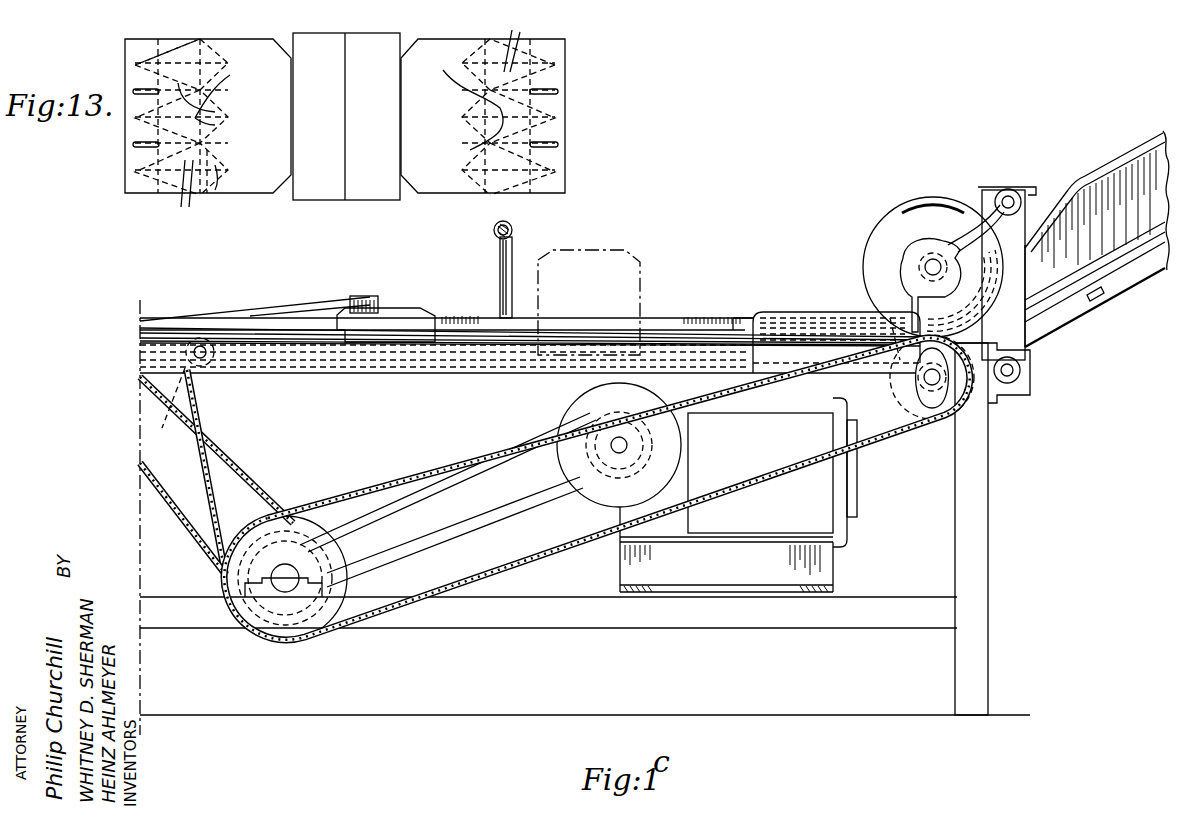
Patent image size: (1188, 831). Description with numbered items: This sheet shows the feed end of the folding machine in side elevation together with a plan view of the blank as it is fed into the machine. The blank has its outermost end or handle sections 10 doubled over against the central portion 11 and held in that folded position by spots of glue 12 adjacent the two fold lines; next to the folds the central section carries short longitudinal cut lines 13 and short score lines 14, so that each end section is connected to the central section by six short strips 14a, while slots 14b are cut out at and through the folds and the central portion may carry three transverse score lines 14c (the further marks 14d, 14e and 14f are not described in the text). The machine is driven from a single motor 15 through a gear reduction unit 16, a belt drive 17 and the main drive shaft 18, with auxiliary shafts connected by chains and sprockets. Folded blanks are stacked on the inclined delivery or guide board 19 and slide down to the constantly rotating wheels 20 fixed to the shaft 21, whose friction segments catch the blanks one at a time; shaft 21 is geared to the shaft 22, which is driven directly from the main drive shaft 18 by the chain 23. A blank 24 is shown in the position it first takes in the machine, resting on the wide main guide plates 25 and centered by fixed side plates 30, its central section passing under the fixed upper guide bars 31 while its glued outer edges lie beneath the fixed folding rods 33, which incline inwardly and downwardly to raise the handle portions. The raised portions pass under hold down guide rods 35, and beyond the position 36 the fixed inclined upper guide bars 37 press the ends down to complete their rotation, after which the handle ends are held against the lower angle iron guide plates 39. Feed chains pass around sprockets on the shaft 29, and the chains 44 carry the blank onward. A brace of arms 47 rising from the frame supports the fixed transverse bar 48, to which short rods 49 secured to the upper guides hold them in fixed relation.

In FIG. 13, the end or handle section 10 is at (345, 117).
In FIG. 13, the central portion 11 is at (369, 190).
In FIG. 13, the spot of glue 12 is at (125, 173).
In FIG. 13, the short longitudinal cut line 13 is at (215, 70).
In FIG. 13, the short score line 14 is at (540, 158).
In FIG. 13, the short strip 14a is at (368, 117).
In FIG. 13, the slot 14b is at (140, 93).
In FIG. 13, the transverse score line 14c is at (345, 96).
In FIG. 13, the flap 14d is at (220, 152).
In FIG. 13, the flap 14e is at (210, 128).
In FIG. 13, the flap 14f is at (215, 190).
In FIG. 1C, the motor 15 is at (792, 426).
In FIG. 1C, the gear reduction unit 16 is at (580, 412).
In FIG. 1C, the belt drive 17 is at (528, 510).
In FIG. 1C, the main drive shaft 18 is at (292, 578).
In FIG. 1C, the inclined delivery or guide board 19 is at (1112, 260).
In FIG. 1C, the constantly rotating wheel 20 is at (890, 230).
In FIG. 1C, the shaft 21 is at (930, 262).
In FIG. 1C, the shaft 22 is at (925, 380).
In FIG. 1C, the chain 23 is at (394, 486).
In FIG. 1C, the blank 24 is at (822, 332).
In FIG. 1C, the main guide plate 25 is at (715, 342).
In FIG. 1C, the shaft 29 is at (205, 360).
In FIG. 1C, the fixed side plate 30 is at (774, 316).
In FIG. 1C, the fixed upper guide bar 31 is at (735, 318).
In FIG. 1C, the fixed folding rod 33 is at (650, 340).
In FIG. 1C, the hold down guide rod 35 is at (674, 322).
In FIG. 1C, the position 36 is at (406, 310).
In FIG. 1C, the fixed inclined upper guide bar 37 is at (356, 297).
In FIG. 1C, the lower angle iron guide plate 39 is at (307, 318).
In FIG. 1C, the chain 44 is at (167, 406).
In FIG. 1C, the arm 47 is at (500, 250).
In FIG. 1C, the fixed transverse shaft or bar 48 is at (512, 234).
In FIG. 1C, the short rod 49 is at (502, 273).